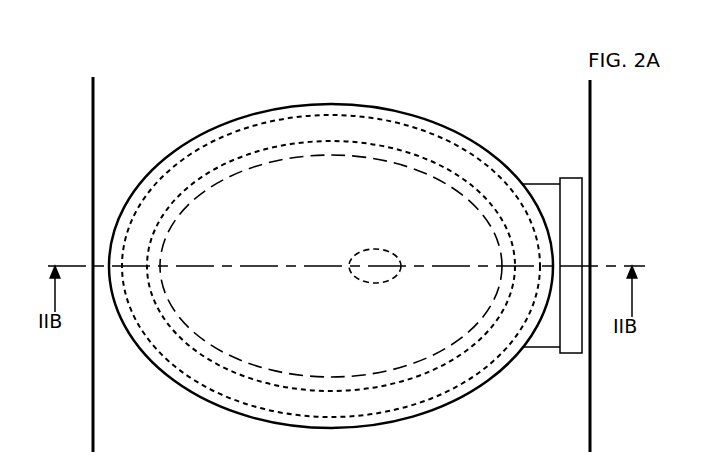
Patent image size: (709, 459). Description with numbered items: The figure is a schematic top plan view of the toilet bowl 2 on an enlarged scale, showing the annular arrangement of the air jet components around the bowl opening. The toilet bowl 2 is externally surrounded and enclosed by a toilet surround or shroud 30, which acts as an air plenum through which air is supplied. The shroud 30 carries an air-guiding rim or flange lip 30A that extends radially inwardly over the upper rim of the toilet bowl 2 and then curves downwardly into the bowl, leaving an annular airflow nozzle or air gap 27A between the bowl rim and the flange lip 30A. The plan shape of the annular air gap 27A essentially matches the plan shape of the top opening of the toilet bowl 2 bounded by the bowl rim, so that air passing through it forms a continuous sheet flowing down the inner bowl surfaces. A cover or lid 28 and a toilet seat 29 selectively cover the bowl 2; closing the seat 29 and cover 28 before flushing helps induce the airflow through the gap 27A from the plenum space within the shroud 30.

The toilet bowl 2 is at (303, 232).
The annular airflow nozzle or air gap 27A is at (227, 362).
The cover or lid 28 is at (172, 382).
The toilet seat 29 is at (427, 385).
The toilet surround or shroud 30 is at (93, 147).
The air-guiding rim or flange lip 30A is at (325, 375).